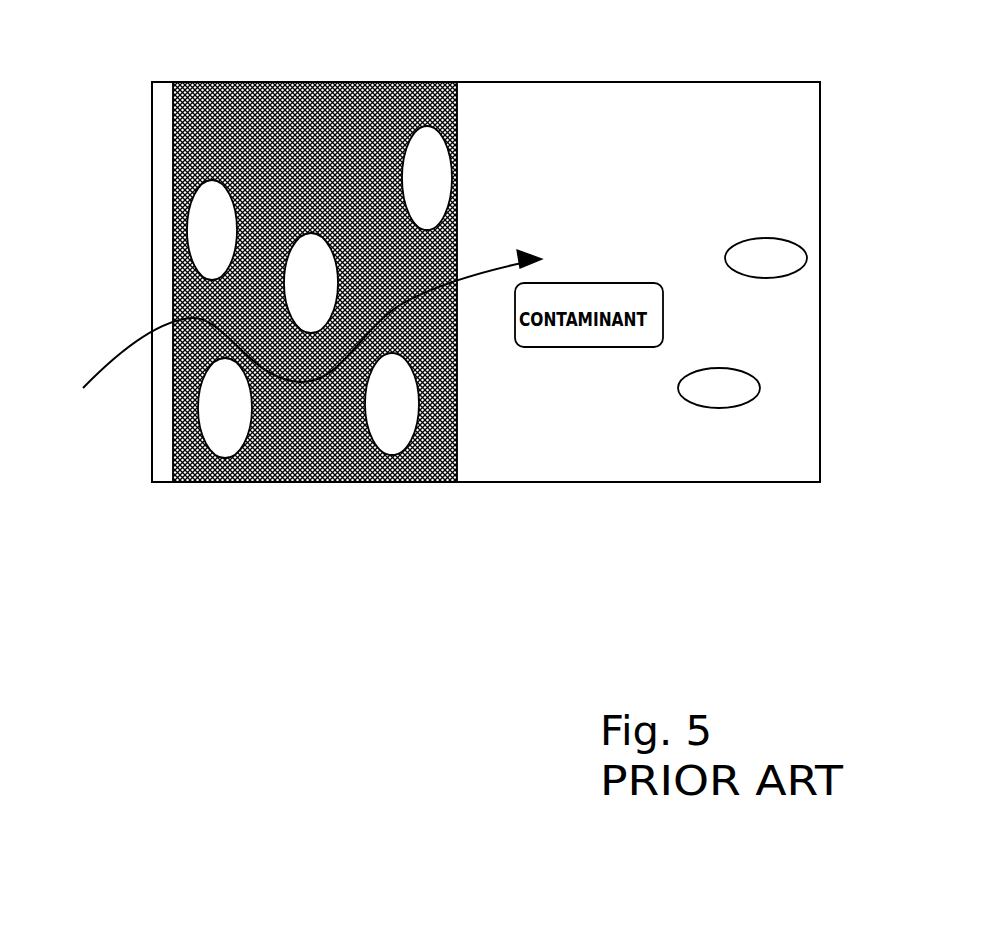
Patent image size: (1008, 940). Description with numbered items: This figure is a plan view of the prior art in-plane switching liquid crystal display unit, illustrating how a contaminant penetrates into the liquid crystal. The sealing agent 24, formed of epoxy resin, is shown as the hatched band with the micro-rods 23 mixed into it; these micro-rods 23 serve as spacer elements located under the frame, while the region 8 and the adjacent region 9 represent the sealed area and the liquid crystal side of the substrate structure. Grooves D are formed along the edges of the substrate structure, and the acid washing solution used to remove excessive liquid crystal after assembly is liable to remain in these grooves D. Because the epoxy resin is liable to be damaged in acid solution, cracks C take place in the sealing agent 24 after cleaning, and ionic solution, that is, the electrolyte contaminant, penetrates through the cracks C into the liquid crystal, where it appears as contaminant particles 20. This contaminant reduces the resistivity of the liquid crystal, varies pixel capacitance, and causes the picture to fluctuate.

The porous filter layer 8 is at (340, 251).
The filter substrate 9 is at (588, 100).
The micro-rods 23 is at (452, 178).
The sealing agent 24 is at (430, 482).
The contaminant particles 20 is at (712, 398).
The grooves D is at (161, 236).
The cracks C is at (120, 350).